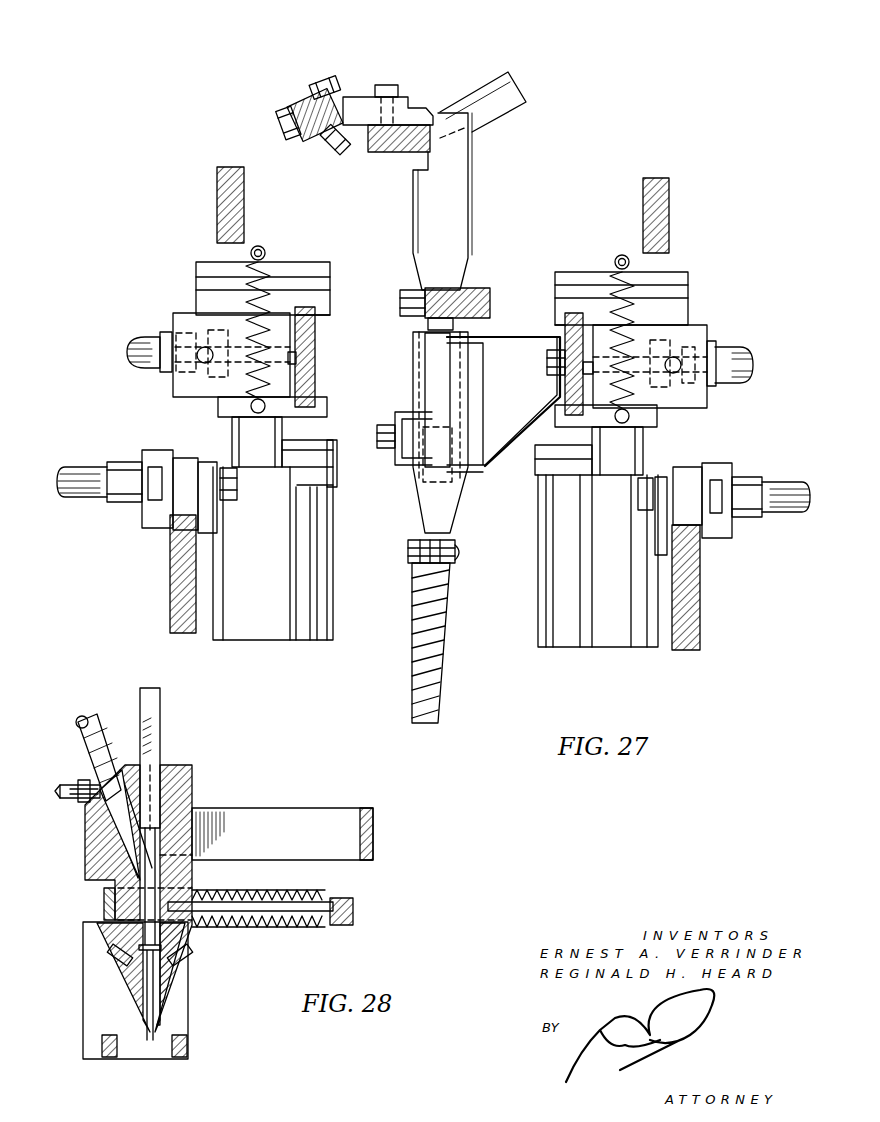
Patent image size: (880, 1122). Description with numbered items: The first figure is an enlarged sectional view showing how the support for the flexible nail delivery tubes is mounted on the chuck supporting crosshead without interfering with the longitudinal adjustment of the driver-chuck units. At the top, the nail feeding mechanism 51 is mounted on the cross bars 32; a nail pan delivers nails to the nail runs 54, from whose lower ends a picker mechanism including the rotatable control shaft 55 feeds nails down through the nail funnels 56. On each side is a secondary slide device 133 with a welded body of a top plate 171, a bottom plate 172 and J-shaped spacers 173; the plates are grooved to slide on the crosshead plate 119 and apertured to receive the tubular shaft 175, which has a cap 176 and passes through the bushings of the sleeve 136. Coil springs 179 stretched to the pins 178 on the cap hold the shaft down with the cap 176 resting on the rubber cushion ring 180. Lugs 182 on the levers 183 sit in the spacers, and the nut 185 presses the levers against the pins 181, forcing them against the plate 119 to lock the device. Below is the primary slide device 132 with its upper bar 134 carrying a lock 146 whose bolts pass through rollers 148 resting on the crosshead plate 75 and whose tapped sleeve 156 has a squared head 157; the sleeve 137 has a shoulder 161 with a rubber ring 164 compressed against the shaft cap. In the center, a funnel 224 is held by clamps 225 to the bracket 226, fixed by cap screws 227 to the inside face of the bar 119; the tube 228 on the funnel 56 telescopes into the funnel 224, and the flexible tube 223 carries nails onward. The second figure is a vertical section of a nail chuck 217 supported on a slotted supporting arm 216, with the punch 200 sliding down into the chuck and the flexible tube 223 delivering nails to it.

In FIG. 27, the nail feeding mechanism 51 is at (304, 41).
In FIG. 27, the rotatable control shaft 55 is at (306, 108).
In FIG. 27, the nail runs 54 is at (500, 112).
In FIG. 27, the nail funnels 56 is at (474, 188).
In FIG. 27, the cross bars 32 is at (244, 190).
In FIG. 27, the secondary slide device 133 is at (189, 238).
In FIG. 27, the pins 178 is at (264, 250).
In FIG. 27, the cap 176 is at (306, 272).
In FIG. 27, the rubber cushion ring 180 is at (318, 287).
In FIG. 27, the top plate 171 is at (330, 306).
In FIG. 27, the coil springs 179 is at (248, 298).
In FIG. 27, the J-shaped spacers 173 is at (185, 313).
In FIG. 27, the tubes 228 is at (412, 324).
In FIG. 27, the crosshead plate 119 is at (318, 344).
In FIG. 27, the pins 181 is at (297, 360).
In FIG. 27, the nut 185 is at (140, 360).
In FIG. 27, the levers 183 is at (163, 373).
In FIG. 27, the lugs 182 is at (205, 363).
In FIG. 27, the primary slide device 132 is at (148, 435).
In FIG. 27, the bottom plate 172 is at (325, 410).
In FIG. 27, the rollers 148 is at (185, 470).
In FIG. 27, the upper bar 134 is at (207, 470).
In FIG. 27, the tubular shaft 175 is at (262, 440).
In FIG. 27, the tubular sleeve 136 is at (325, 448).
In FIG. 27, the tubular sleeve 137 is at (325, 540).
In FIG. 27, the lock 146 is at (134, 540).
In FIG. 27, the sleeve 156 is at (120, 505).
In FIG. 27, the squared head 157 is at (92, 495).
In FIG. 27, the crosshead plate 75 is at (178, 580).
In FIG. 27, the funnel 224 is at (430, 495).
In FIG. 27, the bracket 226 is at (566, 417).
In FIG. 27, the cap screws 227 is at (548, 370).
In FIG. 27, the rubber ring 164 is at (400, 456).
In FIG. 27, the clamps 225 is at (390, 470).
In FIG. 27, the shoulder 161 is at (335, 492).
In FIG. 27, the flexible tube 223 is at (420, 615).
In FIG. 28, the flexible tube 223 is at (86, 738).
In FIG. 28, the punch 200 is at (160, 713).
In FIG. 28, the nail chuck 217 is at (198, 940).
In FIG. 28, the supporting arm 216 is at (308, 808).